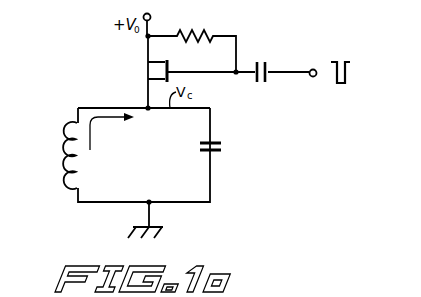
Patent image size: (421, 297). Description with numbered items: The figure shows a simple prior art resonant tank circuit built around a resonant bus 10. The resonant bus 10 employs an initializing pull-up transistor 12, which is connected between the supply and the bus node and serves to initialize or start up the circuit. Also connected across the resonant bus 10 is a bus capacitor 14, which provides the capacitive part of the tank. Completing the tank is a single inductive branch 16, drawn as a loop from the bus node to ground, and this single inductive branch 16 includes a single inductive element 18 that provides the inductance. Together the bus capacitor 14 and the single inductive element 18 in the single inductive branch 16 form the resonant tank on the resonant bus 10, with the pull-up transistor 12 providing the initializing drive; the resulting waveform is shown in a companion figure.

The resonant bus 10 is at (135, 134).
The pull-up transistor 12 is at (212, 82).
The bus capacitor 14 is at (214, 140).
The inductive branch 16 is at (74, 102).
The inductive element 18 is at (63, 127).